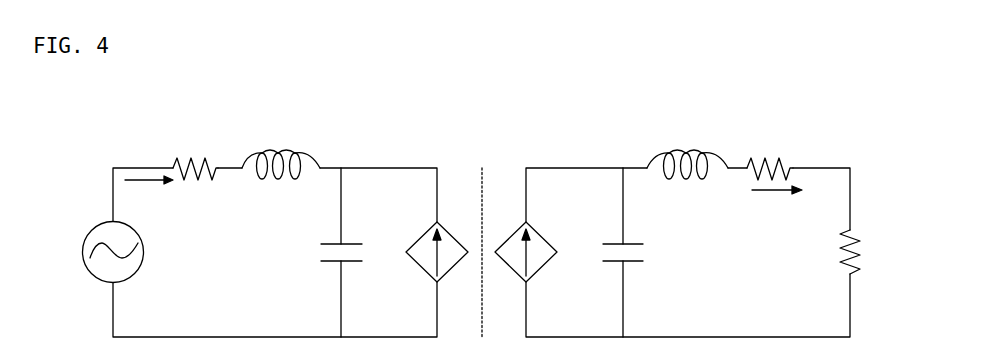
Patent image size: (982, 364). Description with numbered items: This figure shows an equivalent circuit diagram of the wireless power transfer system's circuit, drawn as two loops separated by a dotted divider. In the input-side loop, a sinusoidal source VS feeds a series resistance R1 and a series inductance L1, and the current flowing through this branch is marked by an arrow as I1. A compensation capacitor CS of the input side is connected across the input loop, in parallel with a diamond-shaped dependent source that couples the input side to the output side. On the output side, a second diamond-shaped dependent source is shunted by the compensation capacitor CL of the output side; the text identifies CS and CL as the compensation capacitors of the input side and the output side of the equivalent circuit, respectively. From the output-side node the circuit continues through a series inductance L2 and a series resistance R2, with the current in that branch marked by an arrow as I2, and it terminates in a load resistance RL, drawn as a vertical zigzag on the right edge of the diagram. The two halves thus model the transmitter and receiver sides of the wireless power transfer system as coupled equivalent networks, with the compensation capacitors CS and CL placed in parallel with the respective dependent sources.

The source voltage VS is at (98, 252).
The source-side resistance R1 is at (195, 157).
The source-side inductance L1 is at (281, 156).
The compensation capacitor of the input side CS is at (329, 253).
The source-side current I1 is at (149, 190).
The compensation capacitor of the output side CL is at (611, 253).
The load-side inductance L2 is at (687, 156).
The load-side resistance R2 is at (770, 157).
The load-side current I2 is at (777, 200).
The load resistance RL is at (862, 252).